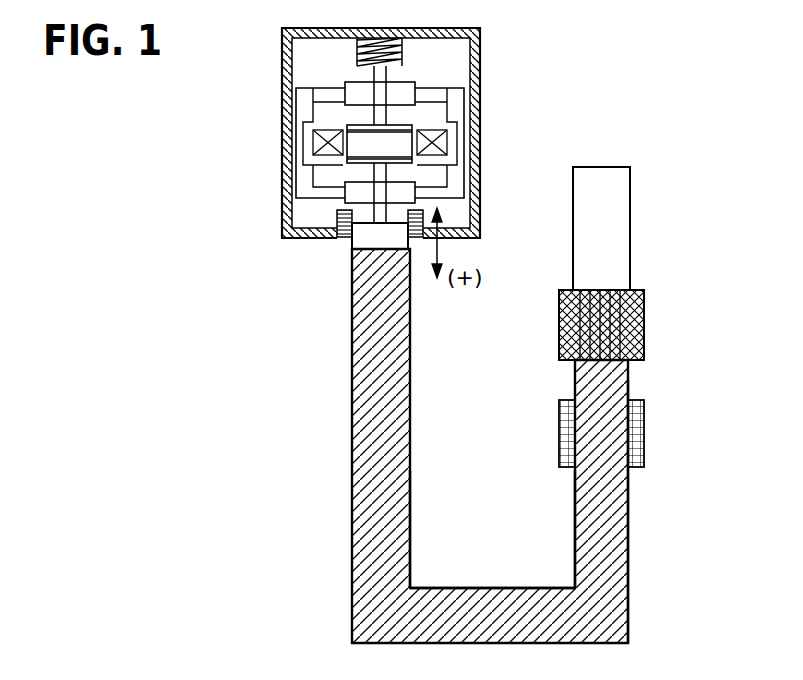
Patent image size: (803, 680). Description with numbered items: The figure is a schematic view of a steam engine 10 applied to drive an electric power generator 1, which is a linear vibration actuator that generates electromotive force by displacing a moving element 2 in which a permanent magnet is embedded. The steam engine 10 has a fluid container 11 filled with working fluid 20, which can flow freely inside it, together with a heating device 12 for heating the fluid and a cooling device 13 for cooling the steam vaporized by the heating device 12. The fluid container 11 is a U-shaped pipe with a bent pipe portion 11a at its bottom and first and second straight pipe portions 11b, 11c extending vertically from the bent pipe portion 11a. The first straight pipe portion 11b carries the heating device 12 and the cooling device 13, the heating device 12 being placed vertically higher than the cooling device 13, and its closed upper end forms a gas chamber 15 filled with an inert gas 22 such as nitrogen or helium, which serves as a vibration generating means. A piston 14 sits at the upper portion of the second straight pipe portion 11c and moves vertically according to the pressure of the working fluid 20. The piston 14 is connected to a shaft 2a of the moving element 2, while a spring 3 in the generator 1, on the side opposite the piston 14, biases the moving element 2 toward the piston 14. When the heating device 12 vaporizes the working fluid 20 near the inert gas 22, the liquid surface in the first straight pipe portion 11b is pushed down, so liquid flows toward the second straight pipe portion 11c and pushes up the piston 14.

The electric power generator 1 is at (270, 73).
The moving element 2 is at (403, 118).
The shaft 2a is at (380, 173).
The spring 3 is at (407, 28).
The steam engine 10 is at (481, 446).
The fluid container 11 is at (535, 446).
The bent pipe portion 11a is at (481, 588).
The first straight pipe portion 11b is at (574, 504).
The second straight pipe portion 11c is at (412, 504).
The heating device 12 is at (644, 318).
The cooling device 13 is at (644, 428).
The piston 14 is at (352, 249).
The gas chamber 15 is at (630, 193).
The working fluid 20 is at (628, 570).
The inert gas 22 is at (615, 250).